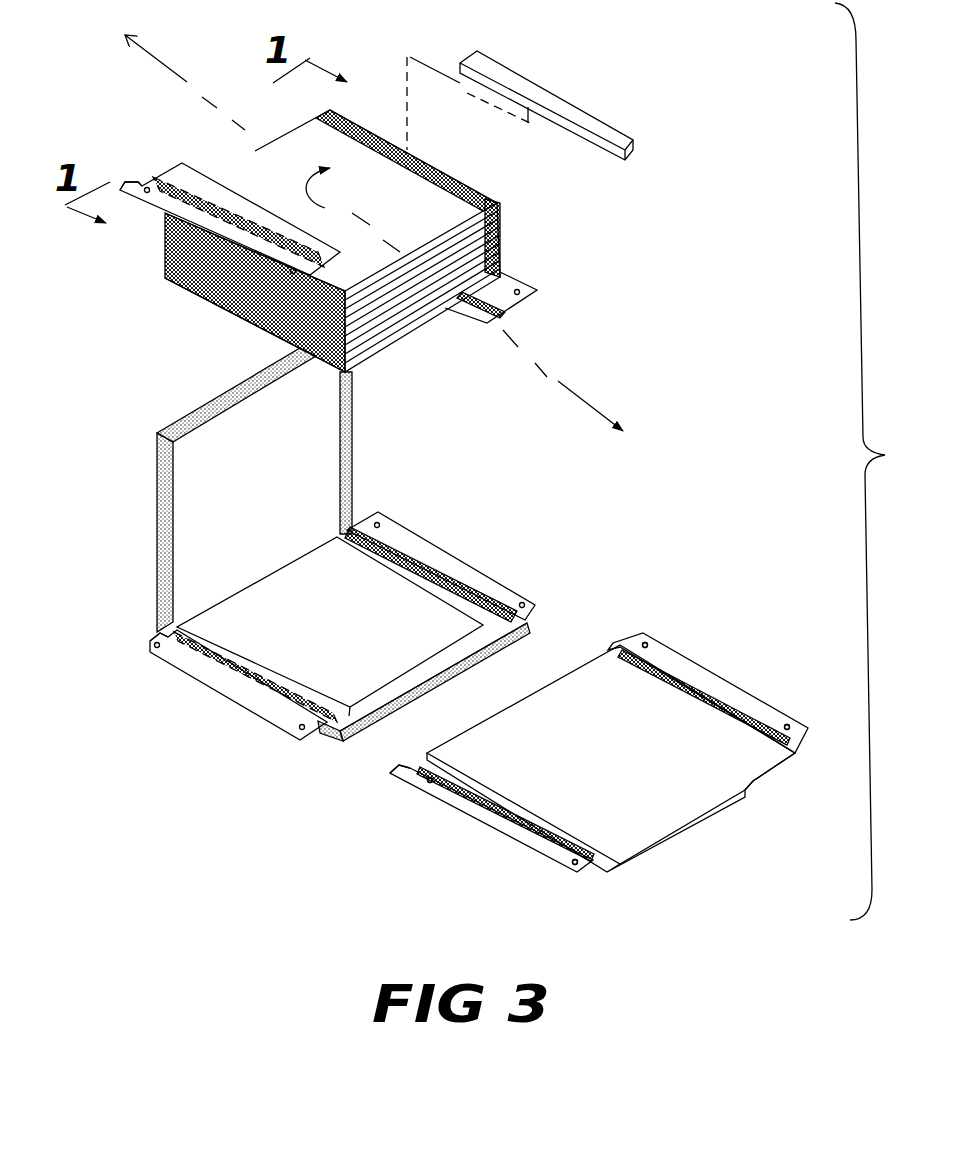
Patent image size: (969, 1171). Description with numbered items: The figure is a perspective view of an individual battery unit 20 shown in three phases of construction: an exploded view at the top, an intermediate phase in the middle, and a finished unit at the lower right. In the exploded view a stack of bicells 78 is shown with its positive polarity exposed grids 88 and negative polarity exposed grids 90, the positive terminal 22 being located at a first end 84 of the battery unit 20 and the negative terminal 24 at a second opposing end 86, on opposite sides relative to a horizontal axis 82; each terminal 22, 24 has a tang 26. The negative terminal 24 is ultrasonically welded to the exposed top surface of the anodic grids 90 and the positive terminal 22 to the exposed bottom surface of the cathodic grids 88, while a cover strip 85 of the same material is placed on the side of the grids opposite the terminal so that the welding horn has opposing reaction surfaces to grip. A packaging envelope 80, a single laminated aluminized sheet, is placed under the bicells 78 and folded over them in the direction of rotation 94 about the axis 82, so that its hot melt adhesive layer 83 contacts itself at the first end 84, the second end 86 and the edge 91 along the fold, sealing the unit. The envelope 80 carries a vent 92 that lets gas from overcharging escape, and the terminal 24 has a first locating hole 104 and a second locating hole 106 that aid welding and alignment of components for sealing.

The individual battery unit 20 is at (619, 219).
The positive terminal 22 is at (513, 280).
The negative terminal 24 is at (238, 242).
The tang 26 is at (120, 187).
The bicells 78 is at (418, 312).
The packaging envelope 80 is at (353, 423).
The axis 82 is at (598, 410).
The adhesive layer 83 is at (193, 413).
The first end of the battery unit 84 is at (433, 163).
The cover strip 85 is at (588, 107).
The second end of the battery unit 86 is at (233, 327).
The positive polarity exposed grids 88 is at (477, 187).
The negative polarity exposed grids 90 is at (268, 340).
The edge 91 is at (437, 690).
The vent 92 is at (742, 792).
The direction of rotation 94 is at (338, 182).
The first locating hole 104 is at (788, 727).
The second locating hole 106 is at (430, 779).